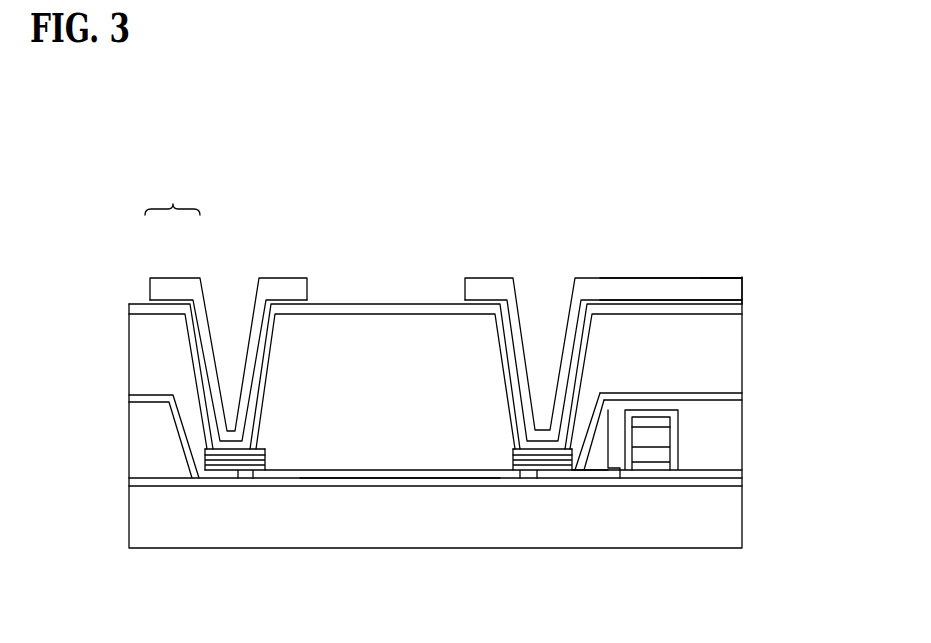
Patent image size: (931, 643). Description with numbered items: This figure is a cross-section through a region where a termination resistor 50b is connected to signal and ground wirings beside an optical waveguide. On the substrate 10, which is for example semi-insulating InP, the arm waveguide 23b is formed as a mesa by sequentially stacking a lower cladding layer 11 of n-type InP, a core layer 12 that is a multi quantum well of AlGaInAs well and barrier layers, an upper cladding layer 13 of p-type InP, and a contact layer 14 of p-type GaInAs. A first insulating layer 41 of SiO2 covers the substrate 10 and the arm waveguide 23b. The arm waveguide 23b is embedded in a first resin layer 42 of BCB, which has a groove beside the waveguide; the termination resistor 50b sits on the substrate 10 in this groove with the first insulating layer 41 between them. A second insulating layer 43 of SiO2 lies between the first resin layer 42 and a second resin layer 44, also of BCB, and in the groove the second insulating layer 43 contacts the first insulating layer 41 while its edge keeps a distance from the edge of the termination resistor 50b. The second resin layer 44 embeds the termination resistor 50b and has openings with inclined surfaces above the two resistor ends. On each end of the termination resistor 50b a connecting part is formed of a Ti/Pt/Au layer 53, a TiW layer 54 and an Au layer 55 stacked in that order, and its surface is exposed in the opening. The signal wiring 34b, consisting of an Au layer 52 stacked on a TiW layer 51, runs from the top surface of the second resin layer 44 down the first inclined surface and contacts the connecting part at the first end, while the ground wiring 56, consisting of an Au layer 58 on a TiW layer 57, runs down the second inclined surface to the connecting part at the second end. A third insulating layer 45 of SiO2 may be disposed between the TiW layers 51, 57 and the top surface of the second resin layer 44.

The substrate 10 is at (708, 533).
The lower cladding layer 11 is at (660, 474).
The core layer 12 is at (657, 455).
The upper cladding layer 13 is at (653, 438).
The contact layer 14 is at (652, 419).
The arm waveguide 23b is at (581, 428).
The signal wiring 34b is at (172, 193).
The first insulating layer 41 is at (520, 482).
The first resin layer 42 is at (140, 452).
The second insulating layer 43 is at (132, 399).
The second resin layer 44 is at (396, 326).
The third insulating layer 45 is at (333, 304).
The termination resistor 50b is at (397, 472).
The TiW layer 51 is at (163, 298).
The Au layer 52 is at (184, 296).
The Ti/Pt/Au layer 53 is at (266, 471).
The TiW layer 54 is at (265, 461).
The Au layer 55 is at (264, 450).
The ground wiring 56 is at (810, 247).
The TiW layer 57 is at (746, 303).
The Au layer 58 is at (743, 284).